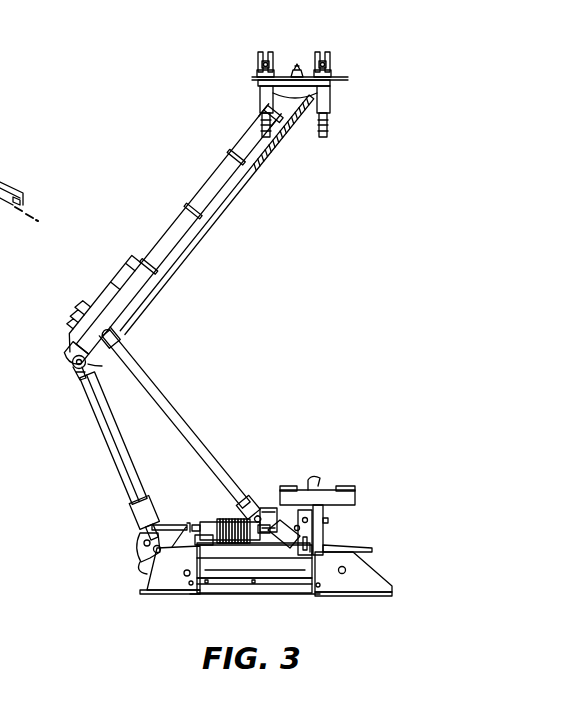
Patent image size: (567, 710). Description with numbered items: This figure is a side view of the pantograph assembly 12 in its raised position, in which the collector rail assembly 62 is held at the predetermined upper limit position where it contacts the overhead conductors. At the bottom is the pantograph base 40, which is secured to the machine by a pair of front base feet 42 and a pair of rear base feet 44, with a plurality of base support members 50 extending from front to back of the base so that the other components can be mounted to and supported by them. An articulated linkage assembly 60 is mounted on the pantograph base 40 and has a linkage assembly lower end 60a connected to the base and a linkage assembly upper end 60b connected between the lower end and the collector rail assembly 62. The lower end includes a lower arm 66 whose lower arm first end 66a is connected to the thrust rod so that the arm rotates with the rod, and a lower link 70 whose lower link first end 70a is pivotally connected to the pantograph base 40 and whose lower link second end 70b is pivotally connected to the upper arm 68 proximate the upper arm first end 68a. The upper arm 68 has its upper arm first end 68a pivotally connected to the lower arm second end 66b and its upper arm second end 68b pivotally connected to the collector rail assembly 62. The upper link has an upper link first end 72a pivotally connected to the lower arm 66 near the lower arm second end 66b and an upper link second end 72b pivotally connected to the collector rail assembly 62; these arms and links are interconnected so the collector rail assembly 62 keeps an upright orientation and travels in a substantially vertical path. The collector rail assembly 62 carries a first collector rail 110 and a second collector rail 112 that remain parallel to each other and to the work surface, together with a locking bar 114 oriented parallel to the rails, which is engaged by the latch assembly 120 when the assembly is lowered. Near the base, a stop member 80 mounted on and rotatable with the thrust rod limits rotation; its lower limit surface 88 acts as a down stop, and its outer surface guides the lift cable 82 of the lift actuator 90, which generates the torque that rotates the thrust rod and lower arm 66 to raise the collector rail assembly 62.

The pantograph assembly 12 is at (190, 125).
The pantograph base 40 is at (356, 612).
The front base feet 42 is at (158, 605).
The rear base feet 44 is at (0, 530).
The base support members 50 is at (250, 577).
The articulated linkage assembly 60 is at (272, 312).
The linkage assembly lower end 60a is at (252, 432).
The linkage assembly upper end 60b is at (270, 198).
The collector rail assembly 62 is at (349, 87).
The lower arm 66 is at (104, 444).
The lower arm first end 66a is at (137, 518).
The lower arm second end 66b is at (82, 372).
The upper arm 68 is at (204, 203).
The upper arm first end 68a is at (75, 352).
The upper arm second end 68b is at (283, 101).
The lower link 70 is at (178, 407).
The lower link first end 70a is at (252, 503).
The lower link second end 70b is at (112, 334).
The upper link first end 72a is at (102, 366).
The upper link second end 72b is at (310, 116).
The stop member 80 is at (137, 557).
The lift cable 82 is at (168, 525).
The lower limit surface 88 is at (145, 571).
The lift actuator 90 is at (236, 516).
The first collector rail 110 is at (262, 63).
The second collector rail 112 is at (330, 63).
The locking bar 114 is at (299, 66).
The latch assembly 120 is at (331, 482).